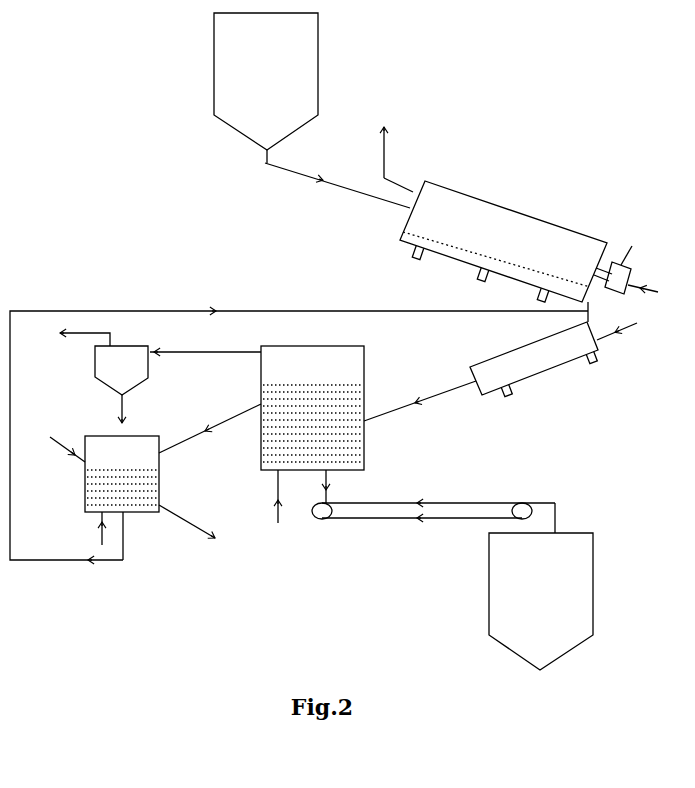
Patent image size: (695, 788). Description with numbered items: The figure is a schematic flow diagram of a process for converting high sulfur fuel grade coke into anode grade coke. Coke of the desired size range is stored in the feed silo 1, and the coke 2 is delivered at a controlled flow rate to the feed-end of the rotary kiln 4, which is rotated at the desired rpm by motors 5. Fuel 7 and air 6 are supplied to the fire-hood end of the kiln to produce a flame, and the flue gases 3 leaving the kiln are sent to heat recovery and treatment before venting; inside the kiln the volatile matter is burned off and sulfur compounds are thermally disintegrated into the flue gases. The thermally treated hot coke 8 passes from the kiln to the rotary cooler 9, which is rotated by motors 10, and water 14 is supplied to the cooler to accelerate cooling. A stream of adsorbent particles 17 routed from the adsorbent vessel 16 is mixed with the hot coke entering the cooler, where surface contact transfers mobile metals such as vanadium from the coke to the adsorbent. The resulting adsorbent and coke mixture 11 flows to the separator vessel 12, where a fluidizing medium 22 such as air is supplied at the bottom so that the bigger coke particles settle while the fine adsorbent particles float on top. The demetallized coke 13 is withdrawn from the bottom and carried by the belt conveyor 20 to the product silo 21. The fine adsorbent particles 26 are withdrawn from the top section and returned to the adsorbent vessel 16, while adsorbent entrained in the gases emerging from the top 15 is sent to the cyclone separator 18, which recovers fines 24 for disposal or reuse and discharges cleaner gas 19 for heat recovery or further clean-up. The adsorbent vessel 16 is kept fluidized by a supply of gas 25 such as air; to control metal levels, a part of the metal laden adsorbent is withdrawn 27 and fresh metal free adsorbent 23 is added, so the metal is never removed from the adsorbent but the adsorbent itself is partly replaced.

The feed silo 1 is at (277, 88).
The coke 2 is at (337, 184).
The flue gases 3 is at (398, 159).
The rotary kiln 4 is at (503, 240).
The motors 5 is at (474, 274).
The air 6 is at (623, 270).
The fuel 7 is at (649, 293).
The thermally treated hot coke 8 is at (311, 431).
The rotary cooler 9 is at (534, 358).
The motors 10 is at (549, 377).
The adsorbent and coke mixture 11 is at (420, 393).
The separator vessel 12 is at (333, 408).
The demetallized coke 13 is at (343, 486).
The water 14 is at (620, 339).
The gases emerging from the top 15 is at (205, 340).
The adsorbent vessel 16 is at (140, 474).
The stream of adsorbent particles 17 is at (141, 536).
The cyclone separator 18 is at (109, 370).
The cleaner gas 19 is at (104, 332).
The belt conveyor 20 is at (433, 507).
The product silo 21 is at (556, 601).
The fluidizing medium 22 is at (293, 505).
The fresh metal free adsorbent 23 is at (67, 441).
The fines 24 is at (141, 409).
The gas 25 is at (82, 528).
The fine adsorbent particles 26 is at (210, 423).
The withdrawn metal laden adsorbent 27 is at (196, 518).